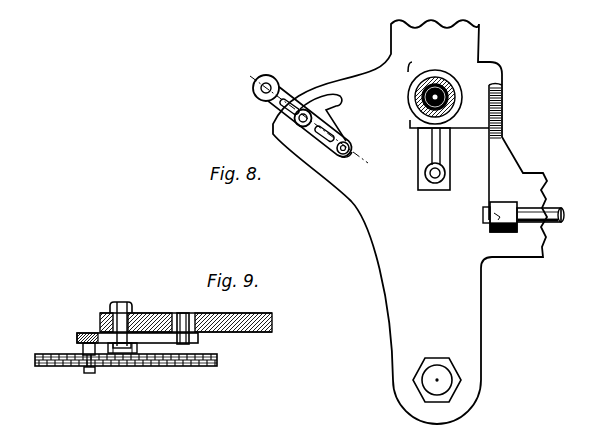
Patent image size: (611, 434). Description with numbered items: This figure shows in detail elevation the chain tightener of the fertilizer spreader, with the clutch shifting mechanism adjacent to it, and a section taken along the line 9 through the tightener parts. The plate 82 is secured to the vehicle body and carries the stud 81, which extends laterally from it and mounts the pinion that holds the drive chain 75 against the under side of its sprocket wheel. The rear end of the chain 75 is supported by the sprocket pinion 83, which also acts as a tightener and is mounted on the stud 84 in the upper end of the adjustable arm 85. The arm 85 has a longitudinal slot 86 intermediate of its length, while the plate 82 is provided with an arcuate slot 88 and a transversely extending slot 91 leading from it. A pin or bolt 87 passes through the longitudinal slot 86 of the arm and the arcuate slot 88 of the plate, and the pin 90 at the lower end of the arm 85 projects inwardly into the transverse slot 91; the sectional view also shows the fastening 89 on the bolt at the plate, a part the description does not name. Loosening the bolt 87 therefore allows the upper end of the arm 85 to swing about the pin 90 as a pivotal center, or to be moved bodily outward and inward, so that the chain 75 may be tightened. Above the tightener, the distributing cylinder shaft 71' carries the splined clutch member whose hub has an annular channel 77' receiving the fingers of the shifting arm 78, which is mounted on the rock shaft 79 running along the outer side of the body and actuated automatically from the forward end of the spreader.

In FIG. 8, the section line 9— 9 is at (245, 62).
In FIG. 8, the cylinder shaft 71' is at (439, 76).
In FIG. 9, the chain 75 is at (185, 367).
In FIG. 8, the annular channel 77' is at (434, 95).
In FIG. 8, the shifting arm 78 is at (504, 138).
In FIG. 8, the rock shaft 79 is at (554, 223).
In FIG. 8, the stud 81 is at (449, 173).
In FIG. 8, the plate 82 is at (410, 222).
In FIG. 9, the plate 82 is at (250, 333).
In FIG. 9, the idler sprocket pinion 83 is at (66, 367).
In FIG. 8, the stud 84 is at (258, 92).
In FIG. 9, the stud 84 is at (82, 348).
In FIG. 8, the adjustable arm 85 is at (279, 93).
In FIG. 9, the adjustable arm 85 is at (92, 336).
In FIG. 8, the longitudinal slot 86 is at (280, 106).
In FIG. 8, the pin or bolt 87 is at (311, 116).
In FIG. 9, the pin or bolt 87 is at (121, 354).
In FIG. 8, the arcuate slot 88 is at (336, 100).
In FIG. 9, the bolt 89 is at (125, 301).
In FIG. 8, the pin 90 is at (350, 147).
In FIG. 9, the pin 90 is at (190, 313).
In FIG. 8, the transversely extending slot 91 is at (345, 158).
In FIG. 9, the transversely extending slot 91 is at (177, 313).